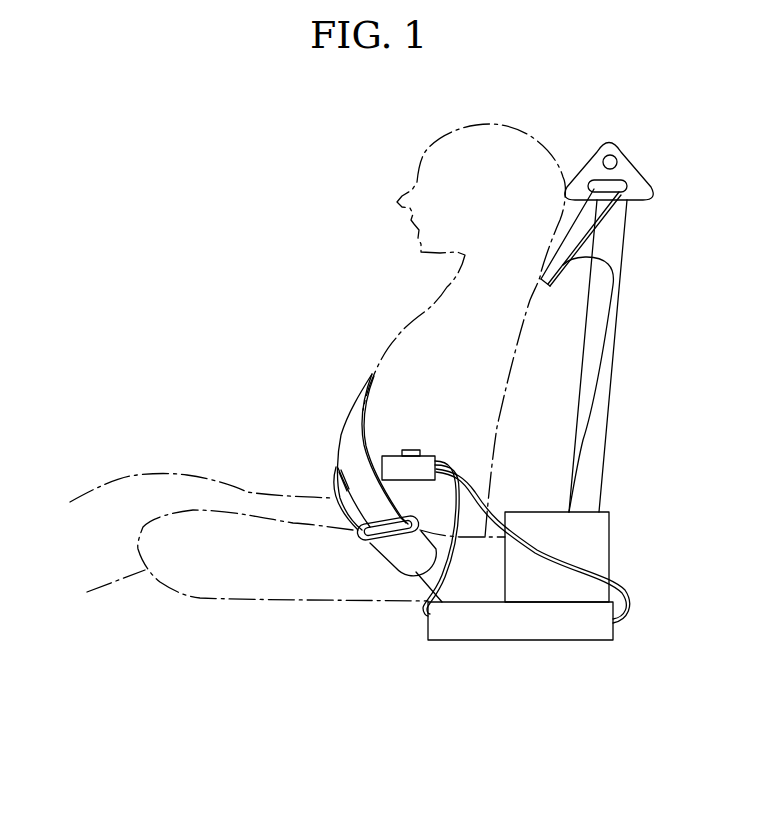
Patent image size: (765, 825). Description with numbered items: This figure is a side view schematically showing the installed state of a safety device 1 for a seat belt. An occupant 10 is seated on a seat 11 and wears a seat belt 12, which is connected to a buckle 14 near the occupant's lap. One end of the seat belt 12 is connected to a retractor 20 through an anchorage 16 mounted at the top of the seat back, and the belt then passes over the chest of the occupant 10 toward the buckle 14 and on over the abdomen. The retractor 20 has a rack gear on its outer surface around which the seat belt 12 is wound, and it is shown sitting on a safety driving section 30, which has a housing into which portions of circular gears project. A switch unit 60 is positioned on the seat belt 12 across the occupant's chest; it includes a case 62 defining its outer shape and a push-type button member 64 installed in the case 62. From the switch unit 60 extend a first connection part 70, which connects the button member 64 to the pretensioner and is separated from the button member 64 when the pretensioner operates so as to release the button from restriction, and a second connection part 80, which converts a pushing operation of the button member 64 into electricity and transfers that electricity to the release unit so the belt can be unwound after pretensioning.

The safety device 1 is at (408, 680).
The occupant 10 is at (418, 316).
The seat 11 is at (594, 263).
The seat belt 12 is at (348, 431).
The buckle 14 is at (400, 558).
The anchorage 16 is at (627, 172).
The retractor 20 is at (613, 521).
The safety driving section 30 is at (522, 643).
The switch unit 60 is at (373, 428).
The case 62 is at (391, 469).
The button member 64 is at (411, 452).
The first connection part 70 is at (452, 460).
The second connection part 80 is at (477, 488).